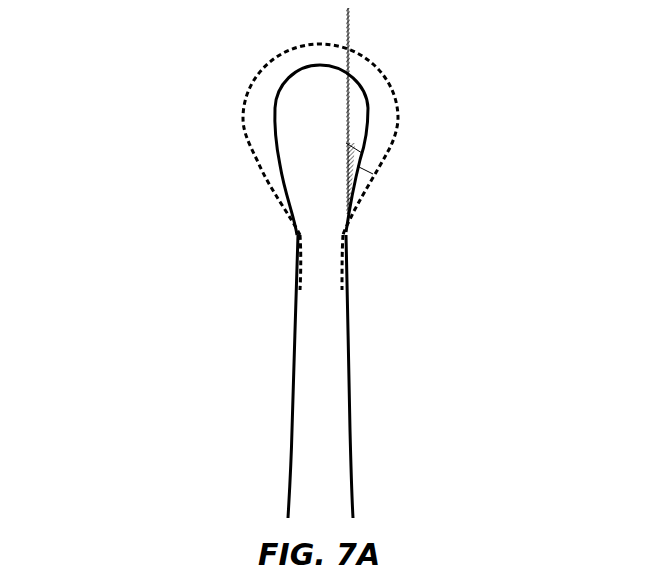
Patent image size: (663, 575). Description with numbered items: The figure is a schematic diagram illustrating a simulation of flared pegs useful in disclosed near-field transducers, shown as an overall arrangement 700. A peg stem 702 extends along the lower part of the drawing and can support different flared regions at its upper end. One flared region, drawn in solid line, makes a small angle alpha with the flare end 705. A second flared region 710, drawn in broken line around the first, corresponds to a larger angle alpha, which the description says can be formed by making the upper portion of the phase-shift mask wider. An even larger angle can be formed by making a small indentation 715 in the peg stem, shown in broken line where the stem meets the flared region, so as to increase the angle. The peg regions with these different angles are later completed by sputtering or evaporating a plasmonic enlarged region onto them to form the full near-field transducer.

The snare device 700 is at (168, 44).
The peg stem 702 is at (293, 430).
The flare end 705 is at (285, 87).
The loop in expanded configuration 710 is at (260, 158).
The small indentation 715 is at (302, 243).